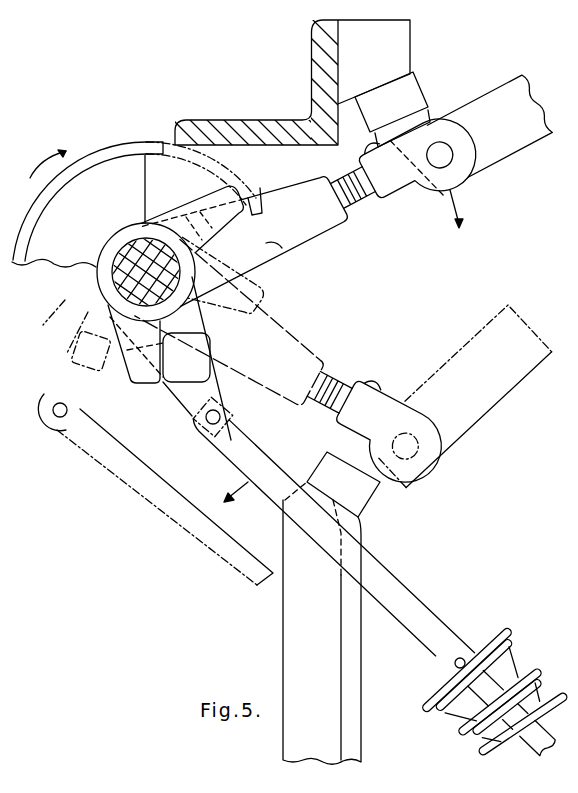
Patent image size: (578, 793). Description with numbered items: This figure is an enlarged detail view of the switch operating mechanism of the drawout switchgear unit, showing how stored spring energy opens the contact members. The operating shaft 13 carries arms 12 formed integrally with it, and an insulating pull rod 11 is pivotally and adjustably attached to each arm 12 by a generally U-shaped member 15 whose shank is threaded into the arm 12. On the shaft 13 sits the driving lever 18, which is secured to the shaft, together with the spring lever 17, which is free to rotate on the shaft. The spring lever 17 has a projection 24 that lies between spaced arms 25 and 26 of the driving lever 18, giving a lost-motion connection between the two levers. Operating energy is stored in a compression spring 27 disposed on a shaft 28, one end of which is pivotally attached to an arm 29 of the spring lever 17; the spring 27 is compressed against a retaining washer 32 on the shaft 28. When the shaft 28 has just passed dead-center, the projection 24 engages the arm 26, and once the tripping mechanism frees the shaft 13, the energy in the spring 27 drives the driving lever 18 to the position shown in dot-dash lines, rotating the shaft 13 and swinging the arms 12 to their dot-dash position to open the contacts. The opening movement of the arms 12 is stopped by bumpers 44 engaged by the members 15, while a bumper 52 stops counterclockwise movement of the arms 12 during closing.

The insulating pull rod 11 is at (520, 148).
The arm 12 is at (336, 230).
The operating shaft 13 is at (128, 243).
The U-shaped member 15 is at (393, 214).
The spring lever 17 is at (42, 260).
The driving lever 18 is at (97, 262).
The projection 24 is at (87, 366).
The arm 25 is at (213, 195).
The arm 26 is at (47, 327).
The compression spring 27 is at (460, 731).
The shaft 28 is at (110, 468).
The arm 29 is at (50, 372).
The retaining washer 32 is at (435, 693).
The bumper 44 is at (370, 505).
The bumper 52 is at (414, 84).